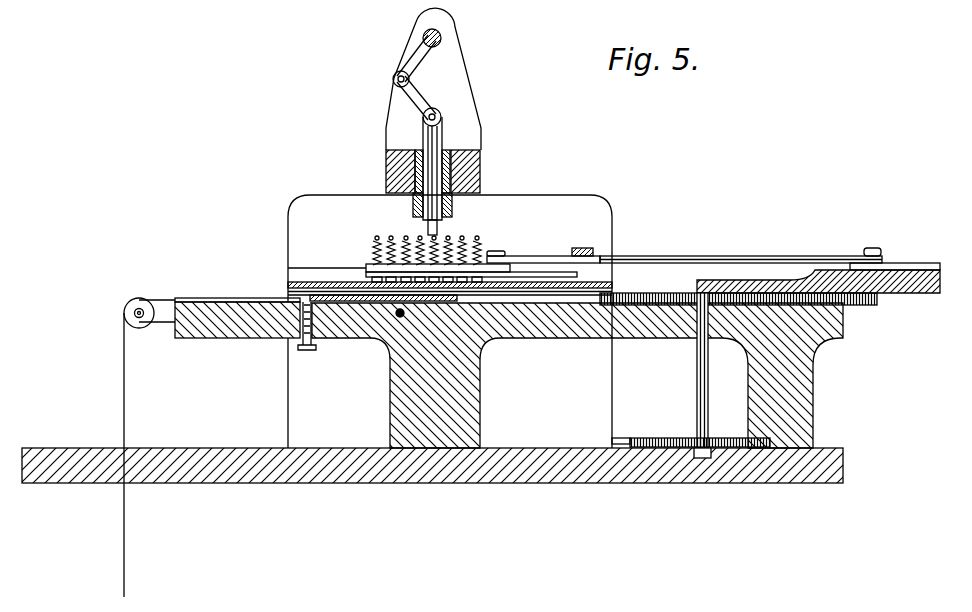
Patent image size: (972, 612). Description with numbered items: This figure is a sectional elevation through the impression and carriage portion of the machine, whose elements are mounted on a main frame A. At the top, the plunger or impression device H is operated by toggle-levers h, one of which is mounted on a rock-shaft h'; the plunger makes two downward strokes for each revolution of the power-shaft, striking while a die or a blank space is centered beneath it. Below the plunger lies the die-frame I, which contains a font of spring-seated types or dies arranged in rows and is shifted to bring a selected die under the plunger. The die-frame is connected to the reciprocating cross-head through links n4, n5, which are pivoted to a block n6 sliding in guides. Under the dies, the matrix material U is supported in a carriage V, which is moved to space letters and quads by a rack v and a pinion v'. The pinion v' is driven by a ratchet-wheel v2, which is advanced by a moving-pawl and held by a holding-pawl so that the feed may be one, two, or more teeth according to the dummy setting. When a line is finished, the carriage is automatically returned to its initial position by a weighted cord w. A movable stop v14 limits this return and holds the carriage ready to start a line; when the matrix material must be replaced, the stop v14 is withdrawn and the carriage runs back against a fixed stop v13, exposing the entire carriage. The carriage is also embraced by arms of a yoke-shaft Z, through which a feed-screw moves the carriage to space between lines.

The main frame A is at (582, 375).
The rock-shaft h' is at (456, 31).
The toggle-levers h is at (417, 77).
The plunger or impression device H is at (441, 131).
The die-frame I is at (432, 244).
The matrix material U is at (348, 293).
The carriage V is at (290, 287).
The rack v is at (738, 286).
The pinion v' is at (684, 363).
The ratchet-wheel v2 is at (683, 441).
The fixed stop v13 is at (178, 299).
The movable stop v14 is at (290, 296).
The weighted cord w is at (137, 455).
The yoke-shaft Z is at (397, 316).
The link n4 is at (741, 244).
The link n5 is at (527, 258).
The block n6 is at (883, 264).